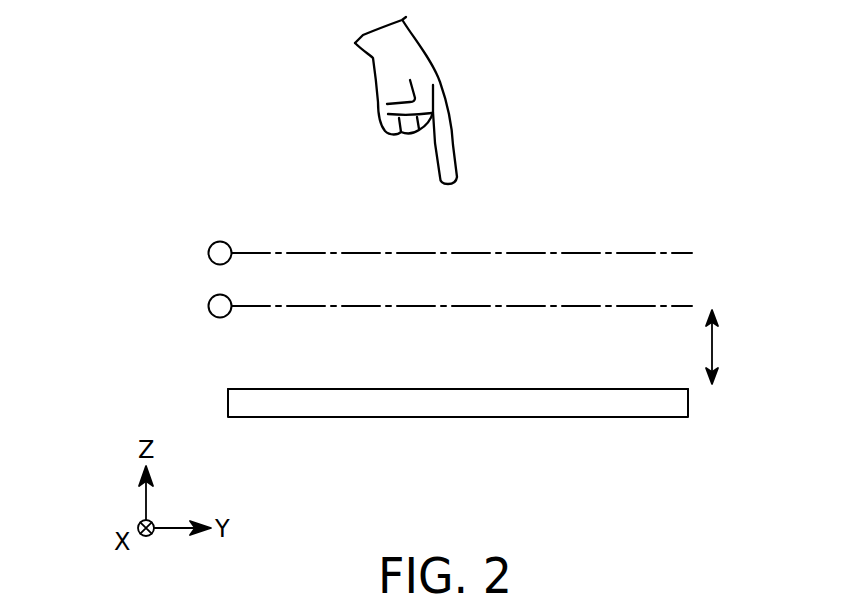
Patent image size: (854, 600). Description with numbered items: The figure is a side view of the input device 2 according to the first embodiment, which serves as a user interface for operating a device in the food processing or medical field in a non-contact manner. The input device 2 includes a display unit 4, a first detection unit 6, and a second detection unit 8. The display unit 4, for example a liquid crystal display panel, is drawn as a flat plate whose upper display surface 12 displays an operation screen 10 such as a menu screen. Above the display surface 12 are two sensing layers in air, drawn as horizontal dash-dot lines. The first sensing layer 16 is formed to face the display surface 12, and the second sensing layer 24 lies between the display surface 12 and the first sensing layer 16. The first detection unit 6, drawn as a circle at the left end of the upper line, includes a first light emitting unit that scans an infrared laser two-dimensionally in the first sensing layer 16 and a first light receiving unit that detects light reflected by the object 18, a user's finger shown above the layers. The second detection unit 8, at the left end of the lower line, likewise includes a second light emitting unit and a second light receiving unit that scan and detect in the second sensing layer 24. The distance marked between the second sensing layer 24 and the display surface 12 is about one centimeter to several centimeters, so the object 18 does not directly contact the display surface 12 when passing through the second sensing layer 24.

The input device 2 is at (660, 210).
The display unit 4 is at (433, 377).
The first detection unit 6 is at (370, 258).
The second detection unit 8 is at (370, 310).
The operation screen 10 is at (458, 376).
The display surface 12 is at (466, 389).
The first sensing layer 16 is at (402, 243).
The object 18 is at (447, 146).
The second sensing layer 24 is at (402, 298).